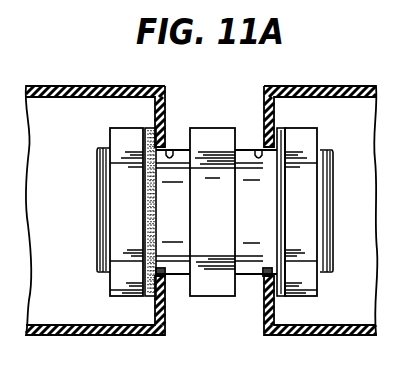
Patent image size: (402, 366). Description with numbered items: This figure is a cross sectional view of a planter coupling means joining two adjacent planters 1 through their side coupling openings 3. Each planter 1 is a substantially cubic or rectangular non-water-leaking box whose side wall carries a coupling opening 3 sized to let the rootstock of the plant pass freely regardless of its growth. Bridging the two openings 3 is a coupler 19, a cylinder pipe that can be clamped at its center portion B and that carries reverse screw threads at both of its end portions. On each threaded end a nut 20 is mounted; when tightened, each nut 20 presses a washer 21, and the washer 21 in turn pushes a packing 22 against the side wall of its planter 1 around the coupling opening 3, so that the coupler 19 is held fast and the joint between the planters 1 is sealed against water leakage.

The planter 1 is at (75, 86).
The bushing B is at (222, 128).
The coupling opening 3 is at (170, 149).
The coupler 19 is at (97, 190).
The nut 20 is at (125, 291).
The washer 21 is at (145, 294).
The packing 22 is at (156, 277).